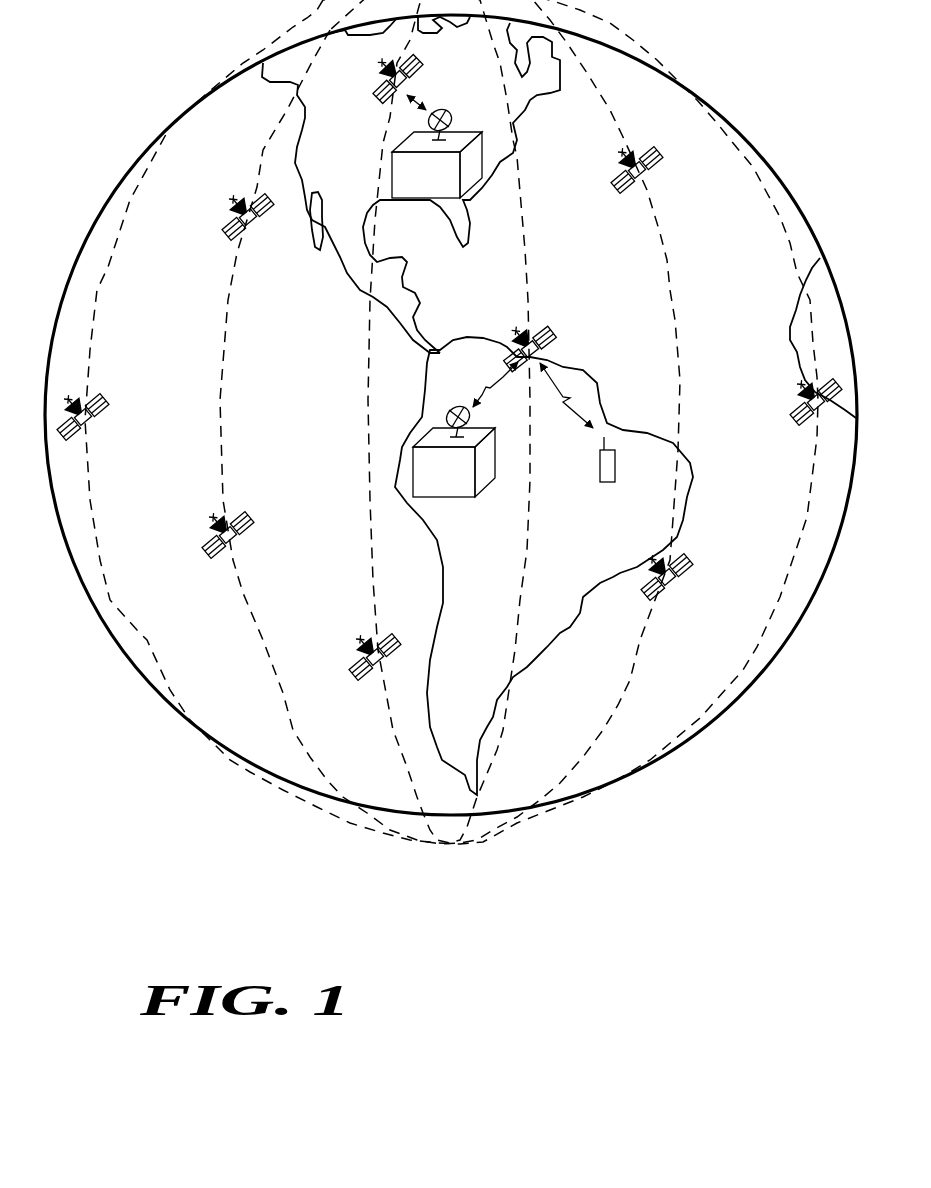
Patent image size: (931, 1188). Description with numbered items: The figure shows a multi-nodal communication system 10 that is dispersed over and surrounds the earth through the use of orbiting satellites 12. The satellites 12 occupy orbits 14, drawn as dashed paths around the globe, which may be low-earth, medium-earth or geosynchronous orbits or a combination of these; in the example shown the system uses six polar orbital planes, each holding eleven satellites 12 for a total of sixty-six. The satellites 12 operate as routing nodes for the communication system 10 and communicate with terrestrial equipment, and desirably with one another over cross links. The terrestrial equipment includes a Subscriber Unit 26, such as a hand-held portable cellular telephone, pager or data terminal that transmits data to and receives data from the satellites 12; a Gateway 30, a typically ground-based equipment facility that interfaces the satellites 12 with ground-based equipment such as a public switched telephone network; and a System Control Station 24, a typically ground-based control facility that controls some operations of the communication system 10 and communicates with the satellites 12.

The multi-nodal communication system 10 is at (441, 934).
The satellite 12 is at (380, 83).
The orbit 14 is at (277, 133).
The System Control Station 24 is at (463, 126).
The Subscriber Unit 26 is at (603, 482).
The Gateway 30 is at (452, 500).